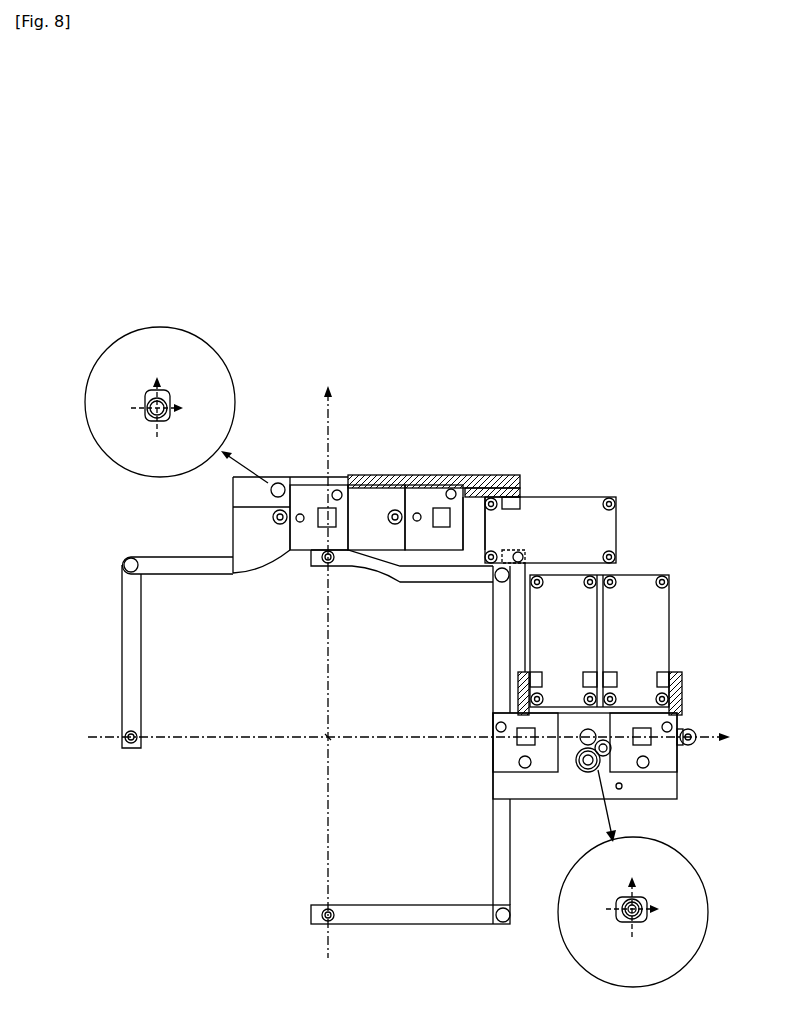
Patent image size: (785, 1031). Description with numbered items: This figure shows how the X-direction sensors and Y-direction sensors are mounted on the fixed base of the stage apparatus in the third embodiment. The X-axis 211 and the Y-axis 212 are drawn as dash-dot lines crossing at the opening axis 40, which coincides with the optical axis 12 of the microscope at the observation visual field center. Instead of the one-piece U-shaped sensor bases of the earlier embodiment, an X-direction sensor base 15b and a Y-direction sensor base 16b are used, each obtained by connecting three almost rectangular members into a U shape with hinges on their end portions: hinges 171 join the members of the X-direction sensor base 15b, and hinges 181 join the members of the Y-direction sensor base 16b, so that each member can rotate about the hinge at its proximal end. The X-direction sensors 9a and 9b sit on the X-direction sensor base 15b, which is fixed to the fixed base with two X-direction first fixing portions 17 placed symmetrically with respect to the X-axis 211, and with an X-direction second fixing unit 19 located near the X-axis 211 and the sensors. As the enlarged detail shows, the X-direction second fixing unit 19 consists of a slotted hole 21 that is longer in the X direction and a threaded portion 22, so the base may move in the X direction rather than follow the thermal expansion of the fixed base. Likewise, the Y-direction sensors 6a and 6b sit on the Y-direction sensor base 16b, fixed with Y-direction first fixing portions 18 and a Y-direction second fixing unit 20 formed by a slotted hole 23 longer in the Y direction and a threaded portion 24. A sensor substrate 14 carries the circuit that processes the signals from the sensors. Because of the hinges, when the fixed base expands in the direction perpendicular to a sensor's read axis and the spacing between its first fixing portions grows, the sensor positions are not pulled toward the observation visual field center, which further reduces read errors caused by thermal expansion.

The Y-direction sensor 6a is at (330, 508).
The Y-direction sensor 6b is at (444, 508).
The X-direction sensor 9a is at (533, 745).
The X-direction sensor 9b is at (652, 745).
The optical axis 12 is at (307, 762).
The sensor substrate 14 is at (616, 513).
The X-direction sensor base 15b is at (400, 905).
The Y-direction sensor base 16b is at (141, 650).
The X-direction first fixing portion 17 is at (320, 566).
The Y-direction first fixing portion 18 is at (516, 694).
The X-direction second fixing unit 19 is at (578, 748).
The Y-direction second fixing unit 20 is at (278, 483).
The slotted hole 21 is at (645, 901).
The threaded portion 22 is at (638, 919).
The slotted hole 23 is at (150, 392).
The threaded portion 24 is at (155, 419).
The opening axis 40 is at (326, 740).
The hinge 171 is at (498, 580).
The hinge 181 is at (522, 552).
The X-axis 211 is at (192, 739).
The Y-axis 212 is at (331, 418).